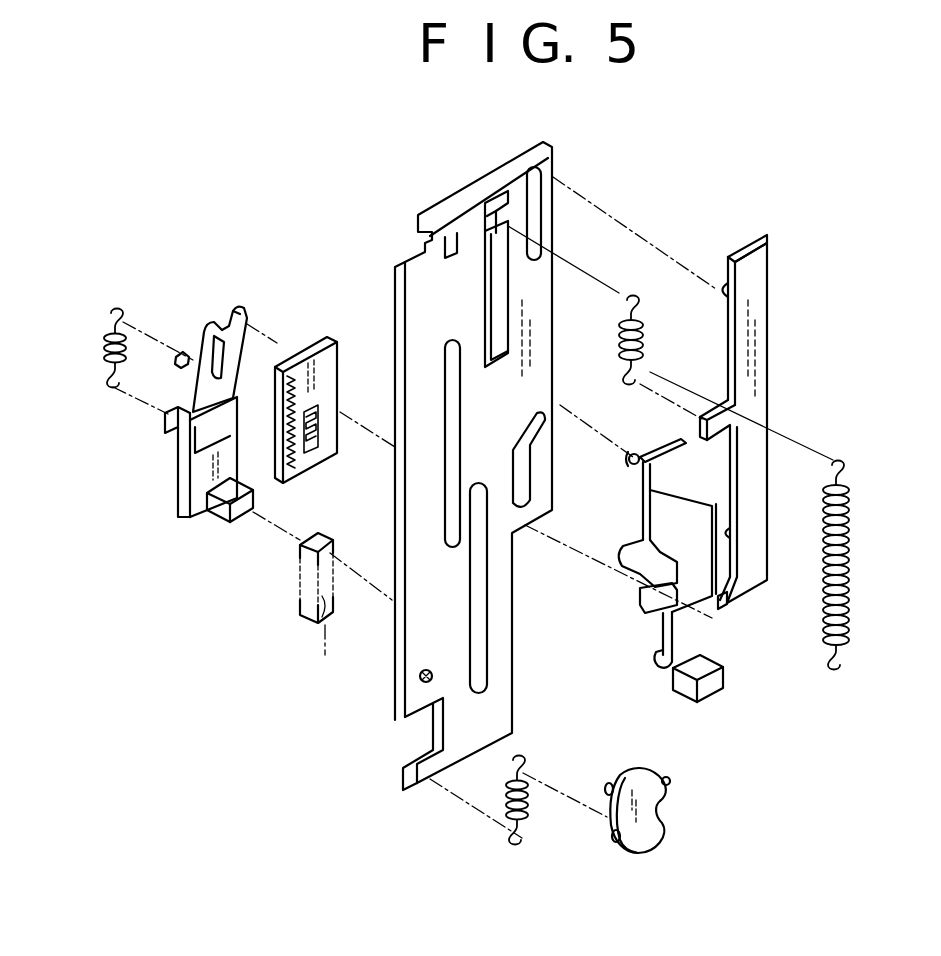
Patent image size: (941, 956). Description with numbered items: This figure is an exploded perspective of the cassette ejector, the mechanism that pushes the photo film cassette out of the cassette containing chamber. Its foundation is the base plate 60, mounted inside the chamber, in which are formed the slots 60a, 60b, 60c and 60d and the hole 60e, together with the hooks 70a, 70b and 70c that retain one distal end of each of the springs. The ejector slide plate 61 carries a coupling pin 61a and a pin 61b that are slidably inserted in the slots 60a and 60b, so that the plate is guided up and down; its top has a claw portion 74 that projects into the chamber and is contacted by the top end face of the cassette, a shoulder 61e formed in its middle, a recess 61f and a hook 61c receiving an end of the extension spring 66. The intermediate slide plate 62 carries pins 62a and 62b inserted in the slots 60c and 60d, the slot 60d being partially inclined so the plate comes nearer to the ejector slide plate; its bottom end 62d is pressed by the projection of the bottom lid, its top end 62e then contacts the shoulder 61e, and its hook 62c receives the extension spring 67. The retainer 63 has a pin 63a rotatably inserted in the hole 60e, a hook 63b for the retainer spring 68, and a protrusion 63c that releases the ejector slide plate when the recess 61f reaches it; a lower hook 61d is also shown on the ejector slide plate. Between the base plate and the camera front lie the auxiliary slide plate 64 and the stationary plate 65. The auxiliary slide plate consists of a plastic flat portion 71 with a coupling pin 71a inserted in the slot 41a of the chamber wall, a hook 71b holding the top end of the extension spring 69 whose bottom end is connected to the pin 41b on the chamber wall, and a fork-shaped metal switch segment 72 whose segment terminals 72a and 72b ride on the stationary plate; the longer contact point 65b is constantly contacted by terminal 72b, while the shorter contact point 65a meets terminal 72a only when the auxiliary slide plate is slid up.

The base plate 60 is at (565, 148).
The slot 60a is at (457, 390).
The slot 60b is at (485, 680).
The slot 60c is at (543, 173).
The slot 60d is at (527, 477).
The hole 60e is at (427, 670).
The ejector slide plate 61 is at (655, 635).
The coupling pin 61a is at (631, 455).
The pin 61b is at (647, 602).
The hook 61c is at (623, 543).
The hook portion 61d is at (660, 673).
The shoulder 61e is at (703, 497).
The recess 61f is at (694, 608).
The intermediate slide plate 62 is at (772, 233).
The pin 62a is at (722, 290).
The pin 62b is at (724, 536).
The hook 62c is at (708, 430).
The bottom end 62d is at (743, 243).
The top end 62e is at (727, 602).
The retainer 63 is at (657, 811).
The pin 63a is at (609, 783).
The hook 63b is at (616, 830).
The protrusion 63c is at (667, 780).
The auxiliary slide plate 64 is at (178, 494).
The stationary plate 65 is at (337, 333).
The contact point 65a is at (313, 427).
The contact point 65b is at (293, 468).
The extension spring 66 is at (850, 573).
The extension spring 67 is at (643, 340).
The retainer spring 68 is at (528, 807).
The extension spring 69 is at (108, 345).
The hook 70a is at (443, 258).
The hook 70b is at (490, 203).
The hook 70c is at (420, 782).
The flat portion 71 is at (180, 518).
The coupling pin 71a is at (223, 522).
The hook 71b is at (167, 422).
The switch segment 72 is at (250, 297).
The segment terminal 72a is at (247, 320).
The segment terminal 72b is at (213, 327).
The claw portion 74 is at (703, 688).
The slot 41a is at (325, 609).
The pin 41b is at (180, 353).